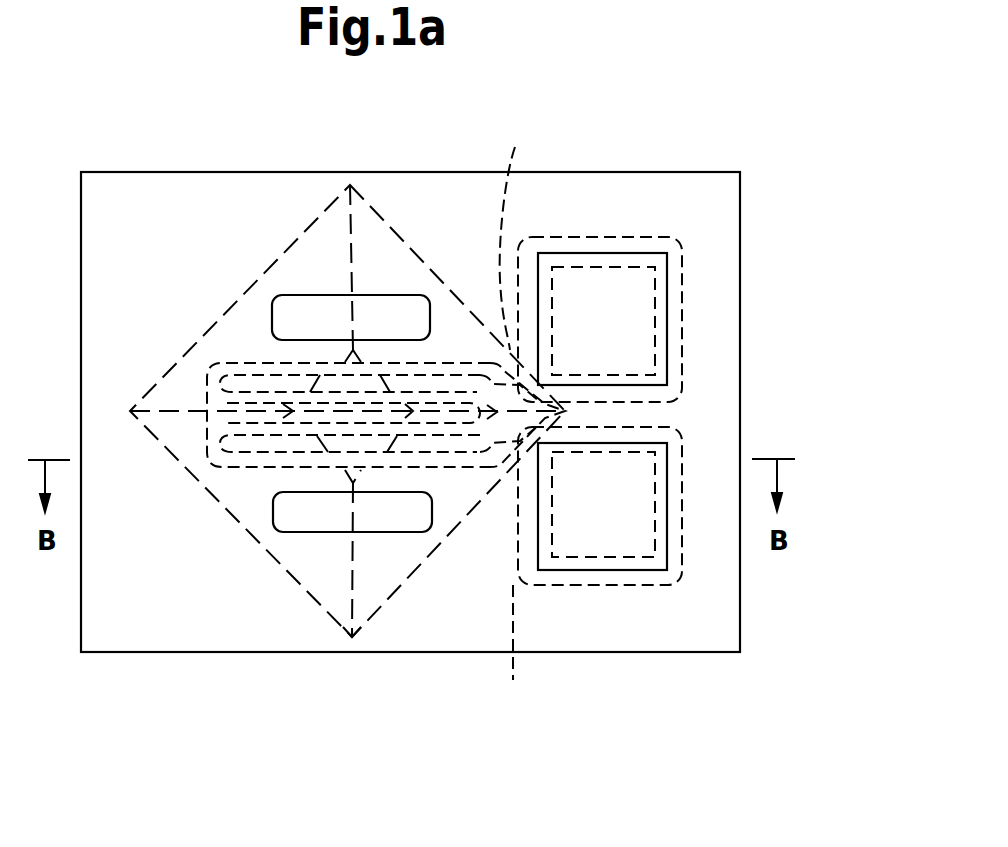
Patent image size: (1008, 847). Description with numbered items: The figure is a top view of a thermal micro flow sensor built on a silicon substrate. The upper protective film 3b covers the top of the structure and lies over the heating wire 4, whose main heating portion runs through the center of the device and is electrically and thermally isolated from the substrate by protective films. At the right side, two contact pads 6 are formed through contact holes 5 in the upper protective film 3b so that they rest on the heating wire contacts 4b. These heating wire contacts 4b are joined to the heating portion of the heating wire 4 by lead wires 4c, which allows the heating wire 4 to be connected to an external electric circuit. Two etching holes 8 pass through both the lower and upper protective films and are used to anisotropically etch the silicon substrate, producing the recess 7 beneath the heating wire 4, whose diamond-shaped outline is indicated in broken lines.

The upper protective film 3b is at (723, 230).
The heating wire 4 is at (290, 362).
The heating wire contacts 4b is at (682, 563).
The lead wires 4c is at (527, 420).
The contact holes 5 is at (628, 268).
The contact pads 6 is at (667, 328).
The recess 7 is at (318, 595).
The etching holes 8 is at (422, 295).